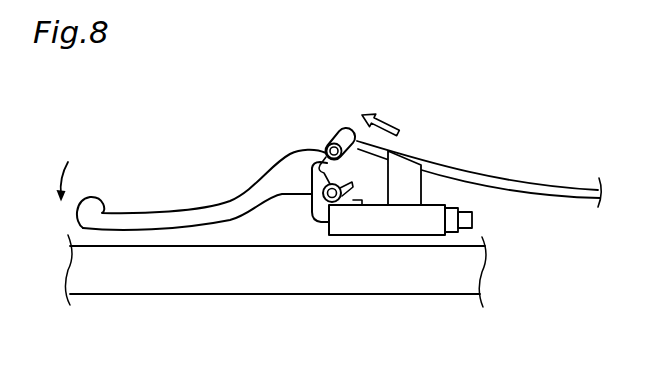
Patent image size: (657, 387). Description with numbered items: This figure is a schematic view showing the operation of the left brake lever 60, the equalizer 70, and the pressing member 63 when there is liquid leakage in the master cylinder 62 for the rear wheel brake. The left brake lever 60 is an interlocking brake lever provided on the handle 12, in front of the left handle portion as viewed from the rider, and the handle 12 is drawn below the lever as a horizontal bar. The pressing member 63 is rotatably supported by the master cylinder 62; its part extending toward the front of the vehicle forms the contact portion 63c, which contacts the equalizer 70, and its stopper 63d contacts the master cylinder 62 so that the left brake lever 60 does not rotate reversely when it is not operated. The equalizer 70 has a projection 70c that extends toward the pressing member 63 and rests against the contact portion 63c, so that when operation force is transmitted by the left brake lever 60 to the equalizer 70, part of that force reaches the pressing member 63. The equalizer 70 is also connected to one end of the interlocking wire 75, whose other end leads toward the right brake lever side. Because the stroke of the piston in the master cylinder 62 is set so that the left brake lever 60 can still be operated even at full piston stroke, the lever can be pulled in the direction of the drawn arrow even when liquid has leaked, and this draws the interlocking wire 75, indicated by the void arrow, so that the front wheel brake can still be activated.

The handle 12 is at (220, 282).
The left brake lever 60 is at (147, 219).
The master cylinder 62 is at (384, 226).
The pressing member 63 is at (305, 210).
The contact portion 63c is at (313, 181).
The stopper 63d is at (343, 205).
The equalizer 70 is at (335, 124).
The projection 70c is at (327, 147).
The interlocking wire 75 is at (492, 182).